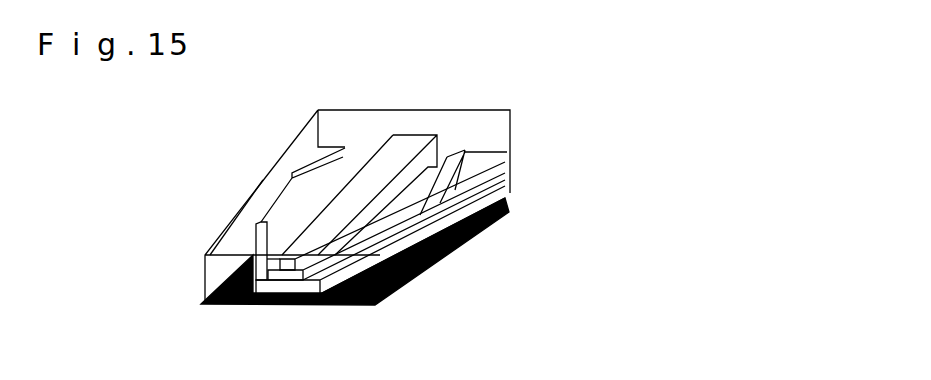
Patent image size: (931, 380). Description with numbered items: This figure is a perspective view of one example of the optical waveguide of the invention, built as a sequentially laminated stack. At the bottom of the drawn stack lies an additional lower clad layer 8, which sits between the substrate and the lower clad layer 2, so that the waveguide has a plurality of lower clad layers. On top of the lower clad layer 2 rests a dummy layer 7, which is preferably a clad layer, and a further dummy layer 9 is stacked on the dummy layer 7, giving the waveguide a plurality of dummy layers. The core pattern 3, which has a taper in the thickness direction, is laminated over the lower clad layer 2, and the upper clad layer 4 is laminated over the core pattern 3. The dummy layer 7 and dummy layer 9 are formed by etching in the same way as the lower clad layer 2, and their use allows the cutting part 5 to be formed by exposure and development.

The lower clad layer 2 is at (420, 222).
The core pattern 3 is at (402, 147).
The upper clad layer 4 is at (262, 191).
The cutting part 5 is at (224, 272).
The dummy layer 7 is at (487, 167).
The lower clad layer 8 is at (407, 247).
The dummy layer 9 is at (480, 158).